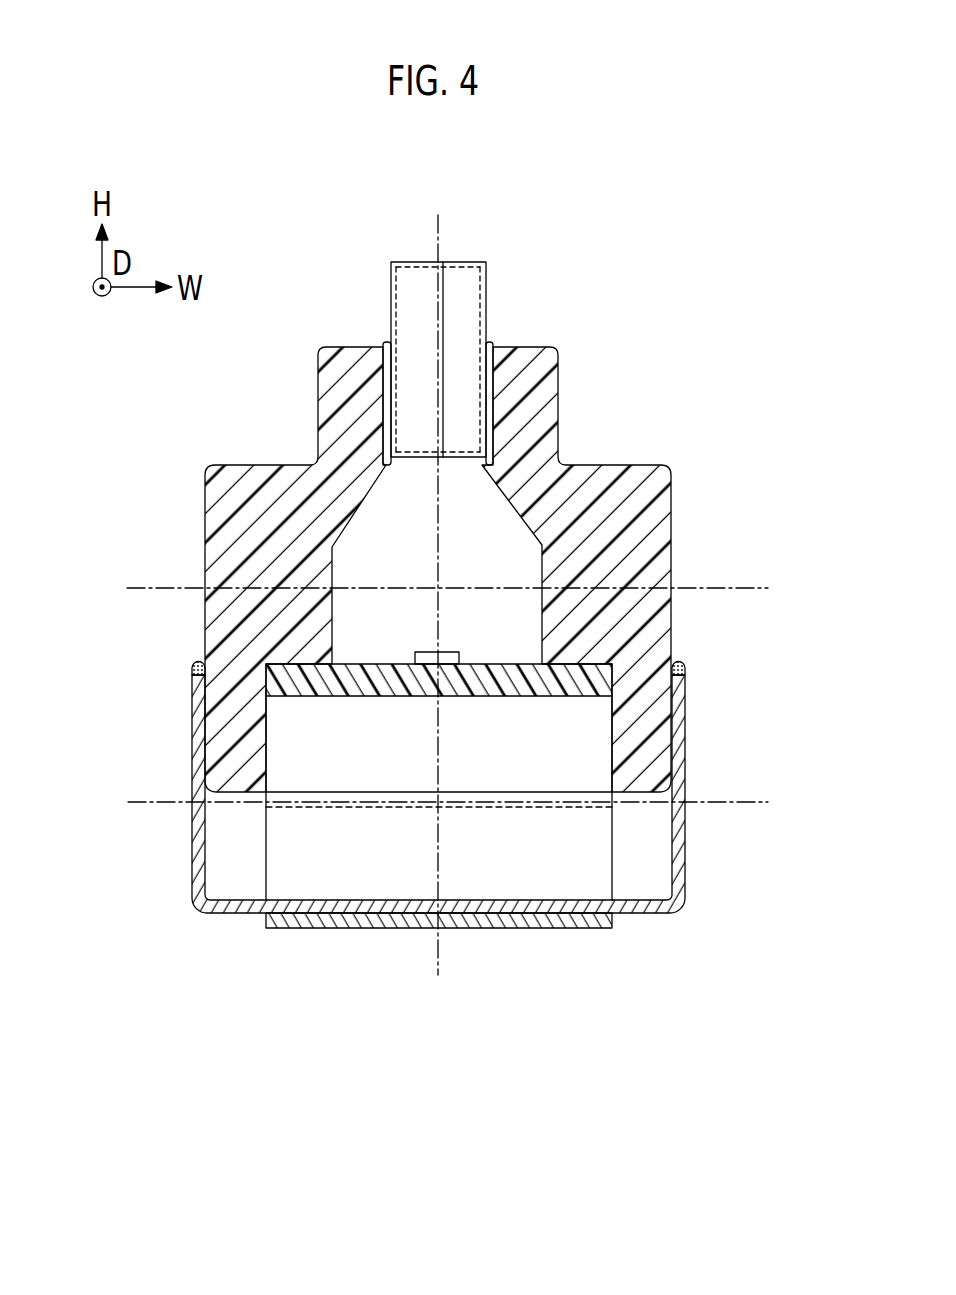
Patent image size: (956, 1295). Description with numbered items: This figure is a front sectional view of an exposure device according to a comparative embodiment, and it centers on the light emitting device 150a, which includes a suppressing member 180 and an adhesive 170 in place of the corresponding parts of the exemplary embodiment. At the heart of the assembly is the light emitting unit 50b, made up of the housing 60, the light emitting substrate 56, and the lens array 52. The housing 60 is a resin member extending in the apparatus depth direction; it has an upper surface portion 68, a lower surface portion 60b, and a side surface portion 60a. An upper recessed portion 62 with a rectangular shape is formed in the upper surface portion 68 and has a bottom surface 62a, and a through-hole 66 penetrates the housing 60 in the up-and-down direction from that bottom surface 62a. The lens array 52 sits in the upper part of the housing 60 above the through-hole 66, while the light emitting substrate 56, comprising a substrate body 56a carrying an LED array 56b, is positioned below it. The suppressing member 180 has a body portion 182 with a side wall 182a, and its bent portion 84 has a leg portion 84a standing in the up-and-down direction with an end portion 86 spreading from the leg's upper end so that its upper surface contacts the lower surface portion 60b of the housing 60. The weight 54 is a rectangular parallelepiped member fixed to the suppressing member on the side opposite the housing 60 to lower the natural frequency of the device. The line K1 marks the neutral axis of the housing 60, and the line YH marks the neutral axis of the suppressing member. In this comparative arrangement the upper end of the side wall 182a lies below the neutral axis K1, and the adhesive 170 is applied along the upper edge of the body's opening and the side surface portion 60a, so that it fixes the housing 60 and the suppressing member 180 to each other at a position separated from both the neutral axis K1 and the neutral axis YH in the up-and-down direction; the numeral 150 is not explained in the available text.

The lens array 52 is at (467, 262).
The weight 54 is at (554, 930).
The light emitting substrate 56 is at (439, 754).
The substrate body 56a is at (381, 698).
The LED array 56b is at (418, 655).
The housing 60 is at (560, 353).
The side surface portion 60a is at (205, 500).
The lower surface portion 60b is at (638, 793).
The upper recessed portion 62 is at (489, 346).
The bottom surface 62a is at (481, 463).
The through-hole 66 is at (510, 567).
The upper surface portion 68 is at (356, 346).
The bent portion 84 is at (383, 794).
The leg portion 84a is at (265, 858).
The end portion 86 is at (265, 797).
The mount assembly 150 is at (722, 1068).
The light emitting device 150a is at (674, 985).
The adhesive 170 is at (191, 666).
The suppressing member 180 is at (444, 824).
The body portion 182 is at (444, 823).
The side wall 182a is at (195, 714).
The light emitting unit 50b is at (641, 336).
The neutral axis K1 is at (747, 586).
The neutral axis YH is at (749, 800).